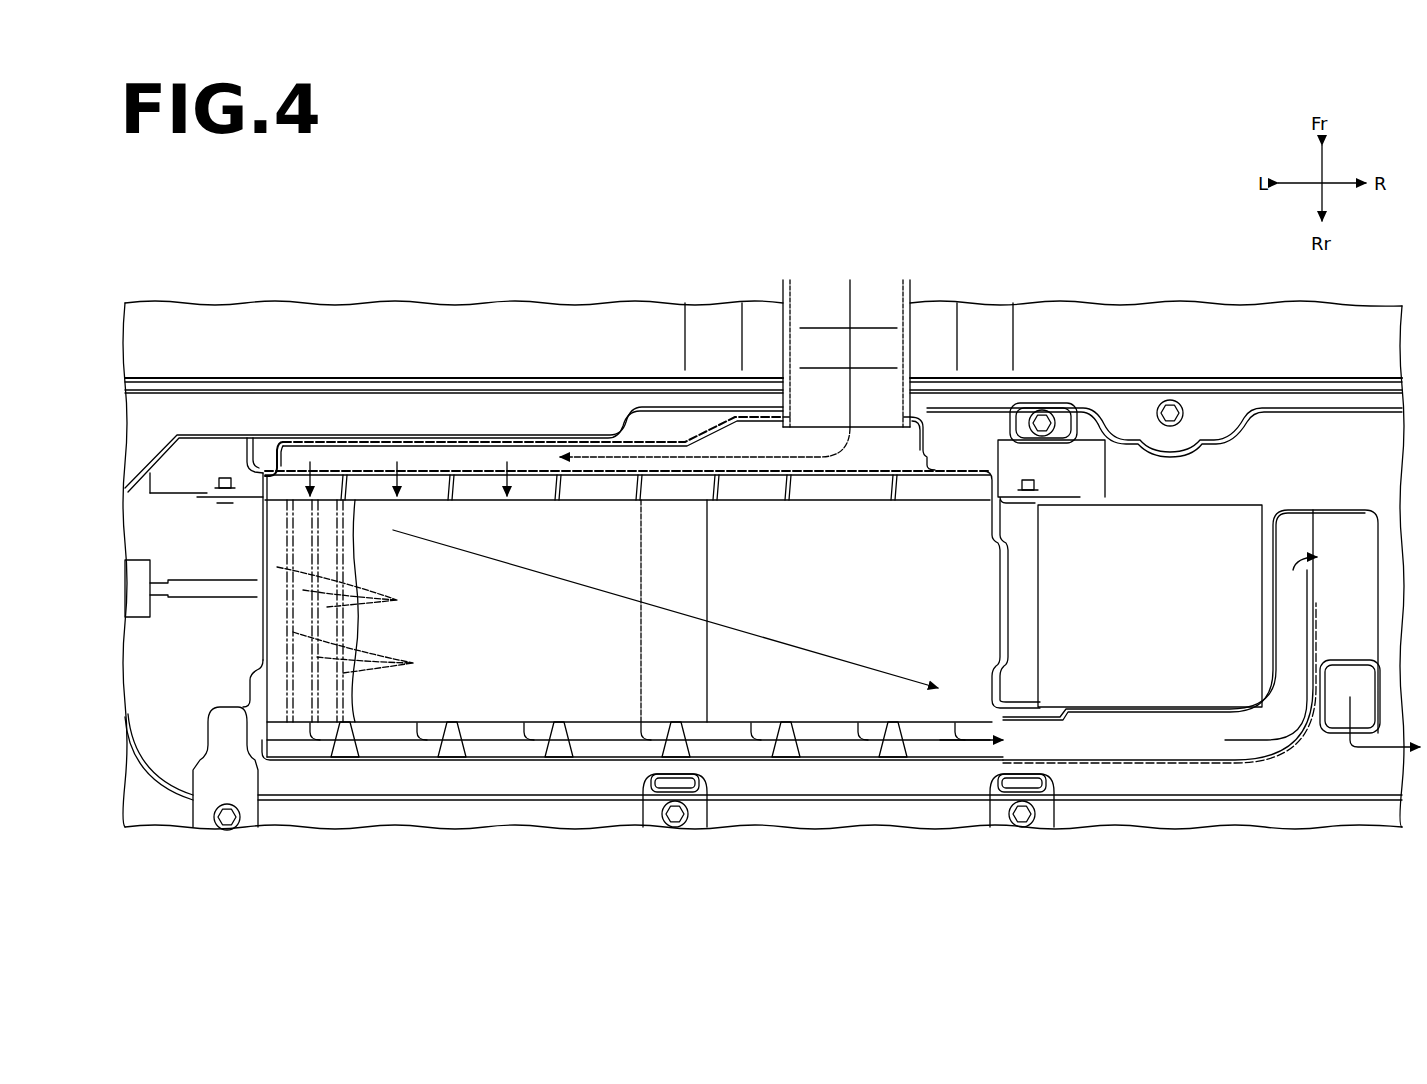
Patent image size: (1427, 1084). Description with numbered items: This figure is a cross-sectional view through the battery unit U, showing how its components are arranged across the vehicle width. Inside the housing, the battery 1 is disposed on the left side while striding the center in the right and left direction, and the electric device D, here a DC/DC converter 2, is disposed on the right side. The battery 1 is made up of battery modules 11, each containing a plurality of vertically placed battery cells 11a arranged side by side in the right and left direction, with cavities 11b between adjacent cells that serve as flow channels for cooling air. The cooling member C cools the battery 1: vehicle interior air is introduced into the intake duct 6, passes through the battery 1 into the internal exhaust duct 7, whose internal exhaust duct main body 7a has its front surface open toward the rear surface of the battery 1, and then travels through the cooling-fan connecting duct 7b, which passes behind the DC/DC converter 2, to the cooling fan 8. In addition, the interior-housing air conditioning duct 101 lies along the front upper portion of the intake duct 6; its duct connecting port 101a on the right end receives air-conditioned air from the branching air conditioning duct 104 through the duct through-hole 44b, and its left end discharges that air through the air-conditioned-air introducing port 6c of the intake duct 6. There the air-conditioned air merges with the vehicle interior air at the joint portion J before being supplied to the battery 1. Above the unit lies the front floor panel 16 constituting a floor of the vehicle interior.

The battery 1 is at (835, 888).
The DC/DC converter 2 is at (1160, 640).
The intake duct 6 is at (967, 470).
The air-conditioned-air introducing port 6c is at (303, 465).
The internal exhaust duct 7 is at (518, 762).
The internal exhaust duct main body 7a is at (905, 742).
The cooling-fan connecting duct 7b is at (1252, 766).
The cooling fan 8 is at (1350, 547).
The battery modules 11 is at (585, 665).
The battery cells 11a is at (359, 590).
The cavities 11b is at (376, 653).
The front floor panel 16 is at (1133, 340).
The duct through-hole 44b is at (797, 408).
The interior-housing air conditioning duct 101 is at (722, 425).
The duct connecting port 101a is at (893, 415).
The branching air conditioning duct 104 is at (905, 370).
The cooling member C is at (385, 772).
The electric device D is at (960, 727).
The joint portion J is at (475, 488).
The battery unit U is at (528, 424).